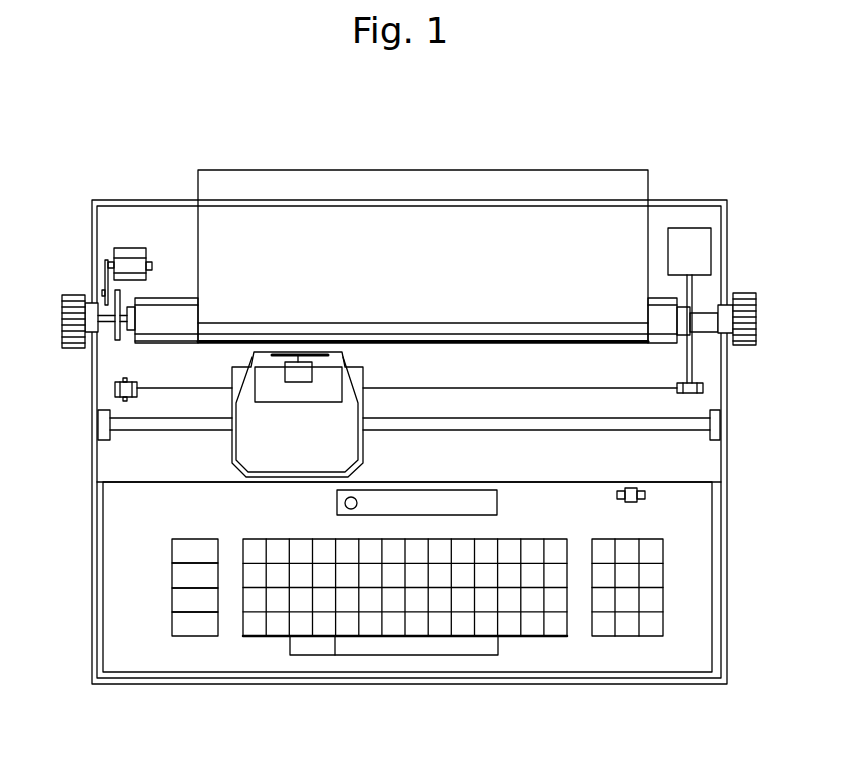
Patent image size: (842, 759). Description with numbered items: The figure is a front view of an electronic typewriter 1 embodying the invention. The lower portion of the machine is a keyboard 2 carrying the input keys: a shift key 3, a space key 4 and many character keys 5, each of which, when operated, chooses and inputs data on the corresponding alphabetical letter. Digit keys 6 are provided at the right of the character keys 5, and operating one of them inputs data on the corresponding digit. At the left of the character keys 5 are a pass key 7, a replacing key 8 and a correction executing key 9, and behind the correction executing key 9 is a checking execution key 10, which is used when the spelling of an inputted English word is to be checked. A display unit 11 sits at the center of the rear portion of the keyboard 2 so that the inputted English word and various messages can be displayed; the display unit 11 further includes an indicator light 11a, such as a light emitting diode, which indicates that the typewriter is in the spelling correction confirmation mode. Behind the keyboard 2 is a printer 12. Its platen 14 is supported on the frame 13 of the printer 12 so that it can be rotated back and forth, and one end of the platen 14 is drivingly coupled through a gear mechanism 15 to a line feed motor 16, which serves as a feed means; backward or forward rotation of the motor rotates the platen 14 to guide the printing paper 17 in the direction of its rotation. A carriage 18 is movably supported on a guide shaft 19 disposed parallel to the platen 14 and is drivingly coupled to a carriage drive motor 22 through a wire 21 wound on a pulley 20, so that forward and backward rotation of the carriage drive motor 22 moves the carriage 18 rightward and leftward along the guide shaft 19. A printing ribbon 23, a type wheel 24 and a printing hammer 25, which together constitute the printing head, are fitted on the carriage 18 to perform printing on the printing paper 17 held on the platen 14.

The electronic typewriter 1 is at (88, 526).
The keyboard 2 is at (698, 602).
The shift key 3 is at (290, 643).
The space key 4 is at (391, 618).
The character keys 5 is at (323, 548).
The digit keys 6 is at (656, 626).
The pass key 7 is at (192, 626).
The replacing key 8 is at (190, 602).
The correction executing key 9 is at (190, 578).
The checking execution key 10 is at (190, 553).
The display unit 11 is at (495, 505).
The indicator light 11a is at (358, 508).
The printer 12 is at (166, 196).
The frame 13 is at (91, 228).
The platen 14 is at (170, 340).
The gear mechanism 15 is at (120, 290).
The line feed motor 16 is at (135, 250).
The printing paper 17 is at (385, 178).
The carriage 18 is at (232, 458).
The guide shaft 19 is at (493, 430).
The pulley 20 is at (118, 382).
The wire 21 is at (510, 388).
The carriage drive motor 22 is at (700, 262).
The printing ribbon 23 is at (347, 462).
The type wheel 24 is at (323, 362).
The printing hammer 25 is at (298, 383).